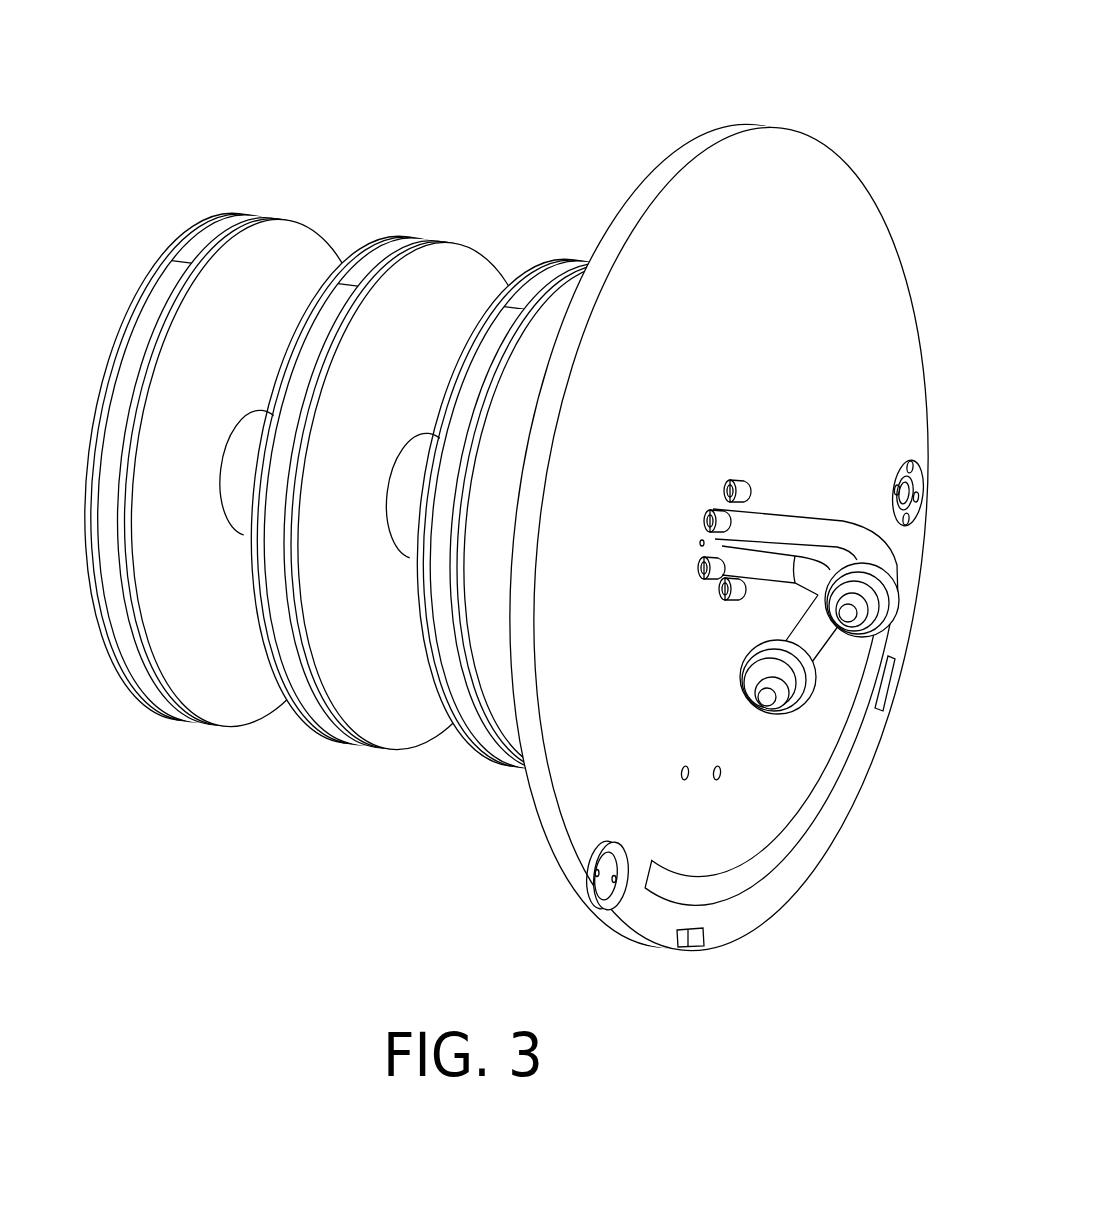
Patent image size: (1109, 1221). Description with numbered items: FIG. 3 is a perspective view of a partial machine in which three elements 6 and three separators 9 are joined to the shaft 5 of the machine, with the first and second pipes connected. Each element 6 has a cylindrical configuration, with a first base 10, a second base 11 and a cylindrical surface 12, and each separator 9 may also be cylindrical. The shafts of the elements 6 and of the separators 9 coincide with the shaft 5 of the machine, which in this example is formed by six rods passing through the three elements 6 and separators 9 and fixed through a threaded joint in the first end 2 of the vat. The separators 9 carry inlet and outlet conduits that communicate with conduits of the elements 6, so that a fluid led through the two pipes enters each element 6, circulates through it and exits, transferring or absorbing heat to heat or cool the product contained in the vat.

The first end 2 is at (719, 501).
The shaft 5 is at (793, 522).
The element 6 is at (388, 523).
The separator 9 is at (245, 508).
The first base 10 is at (283, 258).
The second base 11 is at (108, 657).
The cylindrical surface 12 is at (155, 688).